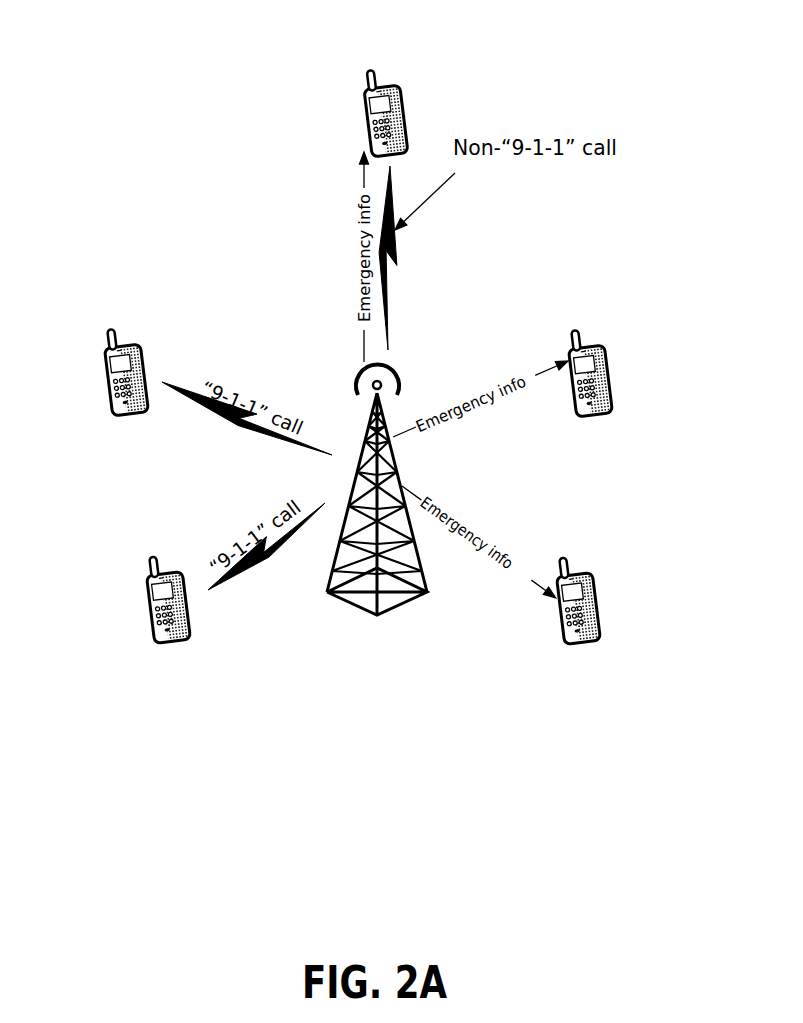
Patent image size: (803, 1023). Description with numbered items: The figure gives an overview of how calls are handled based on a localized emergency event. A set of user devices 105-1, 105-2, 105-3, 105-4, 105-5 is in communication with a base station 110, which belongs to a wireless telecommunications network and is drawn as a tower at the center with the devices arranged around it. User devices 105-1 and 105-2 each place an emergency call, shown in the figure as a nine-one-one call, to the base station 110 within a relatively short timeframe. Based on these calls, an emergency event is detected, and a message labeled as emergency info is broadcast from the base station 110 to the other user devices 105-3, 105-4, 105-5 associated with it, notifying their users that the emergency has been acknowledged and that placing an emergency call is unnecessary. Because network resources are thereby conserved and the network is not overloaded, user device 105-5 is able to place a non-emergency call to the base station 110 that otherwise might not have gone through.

The user device 105-1 is at (139, 566).
The user device 105-2 is at (98, 347).
The user device 105-3 is at (617, 346).
The user device 105-4 is at (604, 572).
The user device 105-5 is at (356, 86).
The base station 110 is at (332, 604).